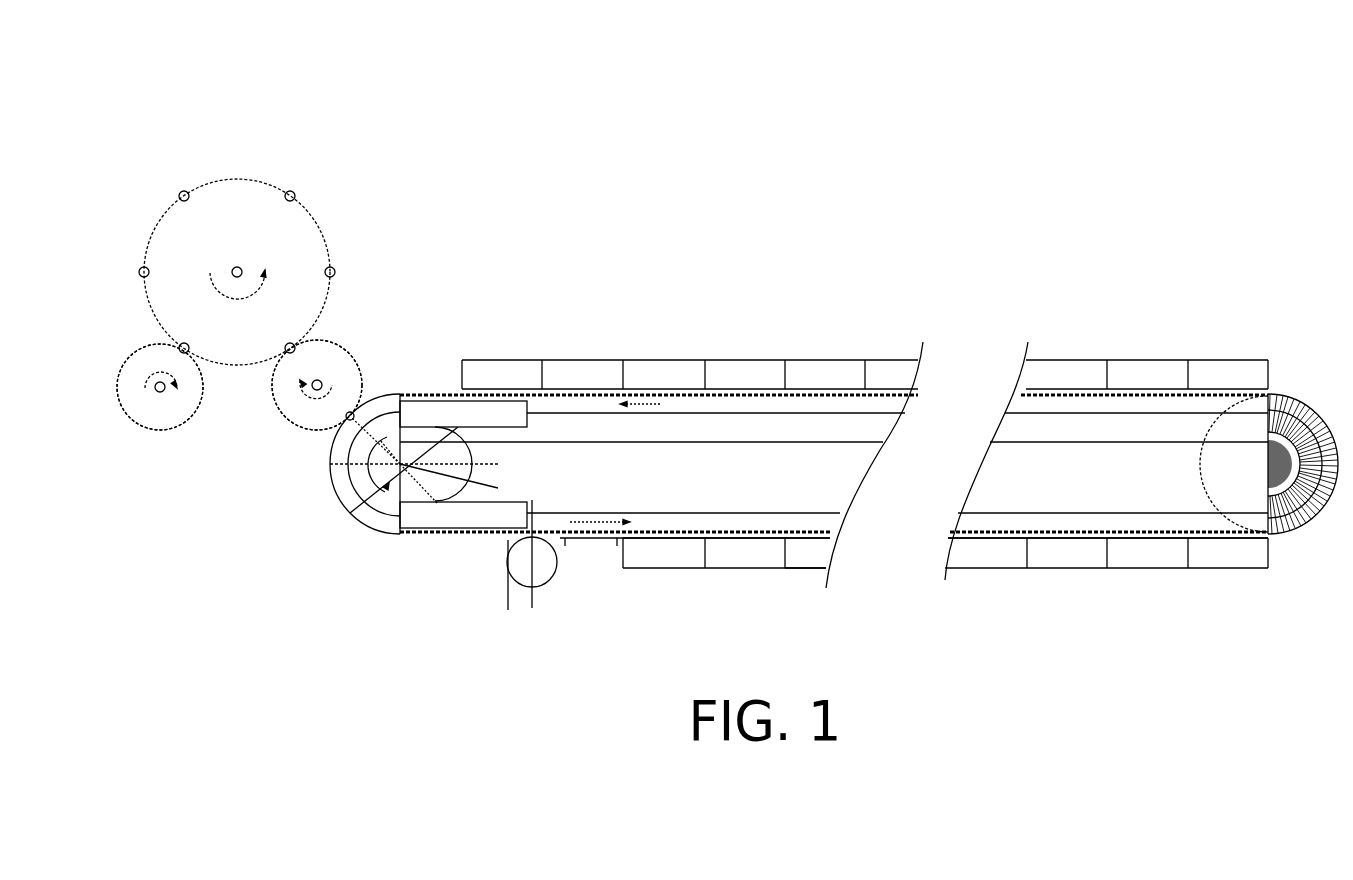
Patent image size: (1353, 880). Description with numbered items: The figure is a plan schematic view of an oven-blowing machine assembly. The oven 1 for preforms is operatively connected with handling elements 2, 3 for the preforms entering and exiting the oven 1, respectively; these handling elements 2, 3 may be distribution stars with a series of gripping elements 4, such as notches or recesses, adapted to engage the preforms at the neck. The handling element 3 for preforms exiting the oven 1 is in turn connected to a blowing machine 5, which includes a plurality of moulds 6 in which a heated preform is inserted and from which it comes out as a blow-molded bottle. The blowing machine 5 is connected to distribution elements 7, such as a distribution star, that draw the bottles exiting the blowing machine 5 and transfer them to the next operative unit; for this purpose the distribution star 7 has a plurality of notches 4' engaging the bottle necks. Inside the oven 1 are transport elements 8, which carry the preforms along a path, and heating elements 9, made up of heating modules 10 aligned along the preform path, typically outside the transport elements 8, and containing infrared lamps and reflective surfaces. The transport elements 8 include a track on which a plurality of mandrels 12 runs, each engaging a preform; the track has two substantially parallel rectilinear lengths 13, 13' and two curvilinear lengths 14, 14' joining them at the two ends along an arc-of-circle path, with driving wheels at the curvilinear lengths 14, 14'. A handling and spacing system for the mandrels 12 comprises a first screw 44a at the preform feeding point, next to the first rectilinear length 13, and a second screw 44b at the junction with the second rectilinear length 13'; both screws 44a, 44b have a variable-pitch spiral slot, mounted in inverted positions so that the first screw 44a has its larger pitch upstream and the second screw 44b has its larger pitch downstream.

The oven 1 is at (692, 280).
The handling element 2 is at (503, 598).
The handling element 3 is at (368, 340).
The gripping elements 4 is at (325, 350).
The notches 4' is at (171, 429).
The blowing machine 5 is at (337, 170).
The moulds 6 is at (142, 267).
The distribution elements 7 is at (150, 437).
The transport elements 8 is at (1097, 508).
The heating elements 9 is at (803, 570).
The heating modules 10 is at (725, 372).
The mandrels 12 is at (697, 513).
The first rectilinear length 13 is at (834, 590).
The second rectilinear length 13' is at (834, 335).
The curvilinear length 14 is at (1274, 402).
The curvilinear length 14' is at (403, 504).
The first screw 44a is at (453, 515).
The second screw 44b is at (428, 397).